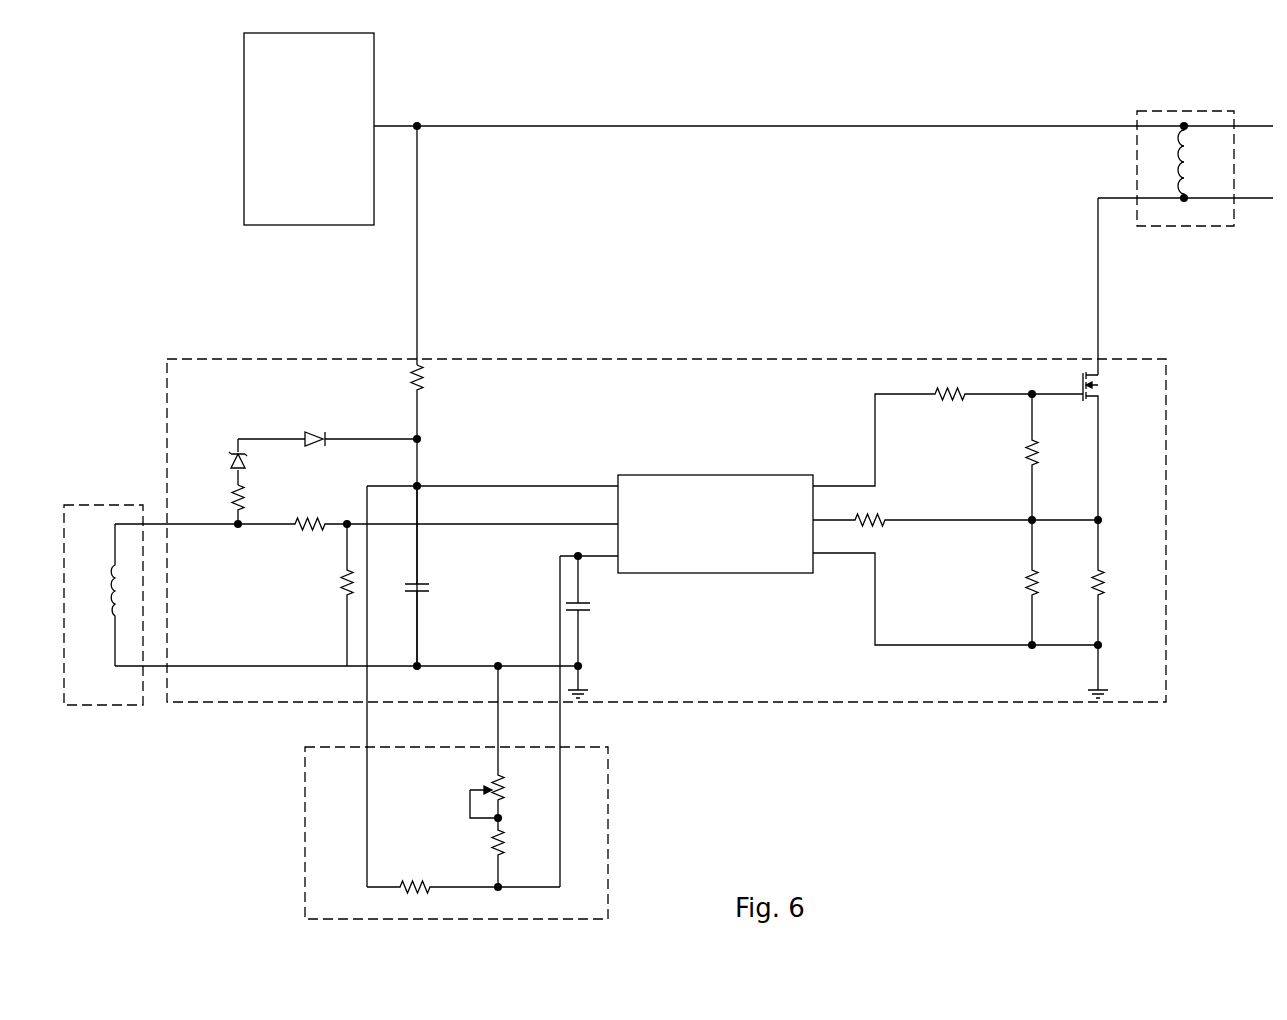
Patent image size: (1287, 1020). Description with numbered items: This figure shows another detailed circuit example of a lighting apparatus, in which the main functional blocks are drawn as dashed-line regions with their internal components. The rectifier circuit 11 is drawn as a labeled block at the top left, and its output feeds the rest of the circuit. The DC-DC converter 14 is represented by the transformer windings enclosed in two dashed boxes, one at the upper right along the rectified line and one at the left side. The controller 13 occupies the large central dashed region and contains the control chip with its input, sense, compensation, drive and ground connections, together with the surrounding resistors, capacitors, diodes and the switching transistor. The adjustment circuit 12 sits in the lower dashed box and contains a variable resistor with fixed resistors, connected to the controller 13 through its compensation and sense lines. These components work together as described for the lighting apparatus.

The rectifier circuit 11 is at (258, 33).
The adjustment circuit 12 is at (608, 790).
The controller 13 is at (587, 358).
The DC-DC converter 14 is at (1168, 111).